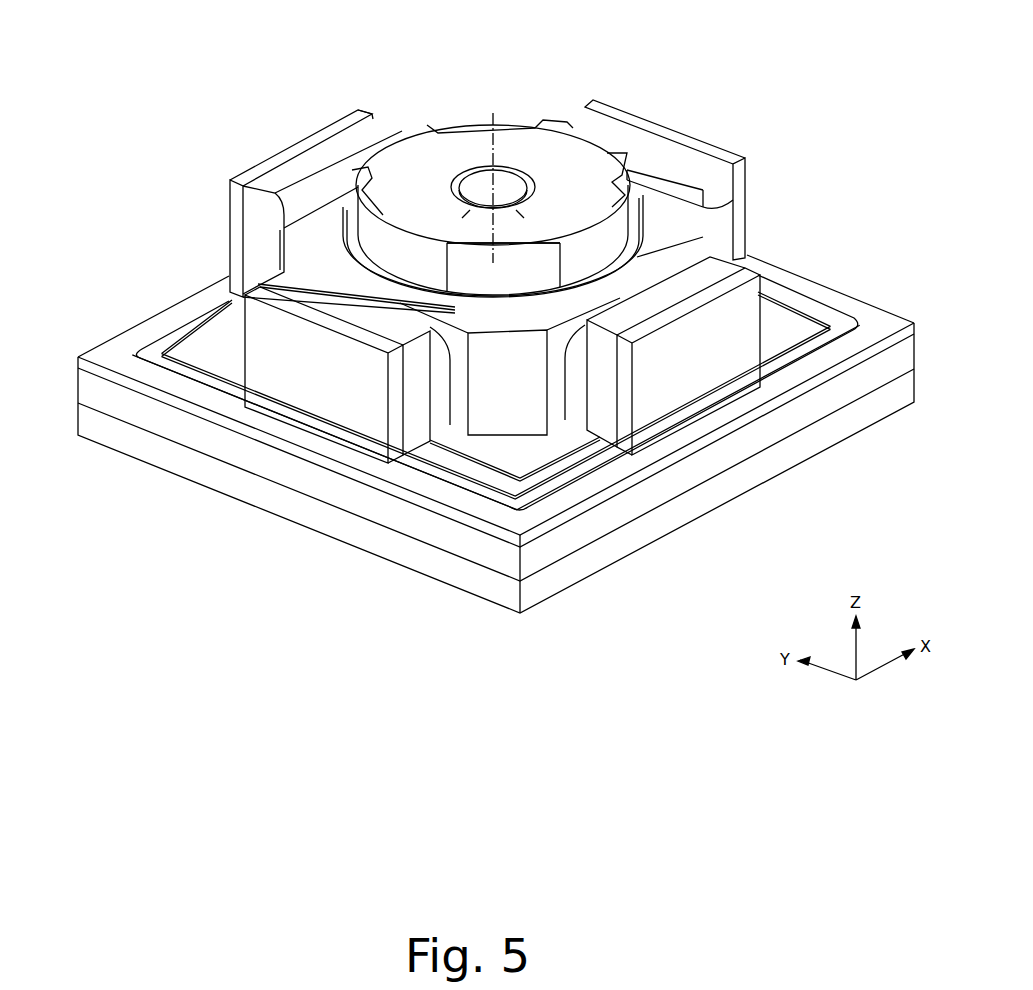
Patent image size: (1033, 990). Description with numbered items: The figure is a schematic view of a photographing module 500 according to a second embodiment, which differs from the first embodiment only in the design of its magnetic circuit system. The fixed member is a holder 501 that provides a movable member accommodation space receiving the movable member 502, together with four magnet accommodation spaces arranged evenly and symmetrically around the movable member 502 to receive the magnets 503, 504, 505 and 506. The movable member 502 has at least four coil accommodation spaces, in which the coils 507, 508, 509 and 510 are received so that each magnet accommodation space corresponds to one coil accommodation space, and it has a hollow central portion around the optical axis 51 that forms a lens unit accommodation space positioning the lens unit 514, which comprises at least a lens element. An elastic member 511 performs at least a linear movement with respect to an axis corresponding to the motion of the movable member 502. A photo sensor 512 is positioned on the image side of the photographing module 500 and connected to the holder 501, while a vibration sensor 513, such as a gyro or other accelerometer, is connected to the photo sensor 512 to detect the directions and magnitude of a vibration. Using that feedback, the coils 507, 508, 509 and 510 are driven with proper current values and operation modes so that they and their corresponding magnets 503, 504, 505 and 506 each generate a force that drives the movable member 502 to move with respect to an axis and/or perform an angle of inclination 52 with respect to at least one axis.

The photographing module 500 is at (806, 94).
The holder 501 is at (120, 352).
The movable member 502 is at (668, 228).
The magnet 503 is at (262, 210).
The magnet 504 is at (633, 130).
The magnet 505 is at (754, 254).
The magnet 506 is at (417, 410).
The coil 507 is at (348, 190).
The coil 508 is at (700, 204).
The coil 509 is at (580, 435).
The coil 510 is at (444, 382).
The elastic member 511 is at (540, 478).
The photo sensor 512 is at (722, 455).
The vibration sensor 513 is at (272, 498).
The lens unit 514 is at (472, 147).
The optical axis 51 is at (497, 135).
The angle of inclination 52 is at (458, 173).